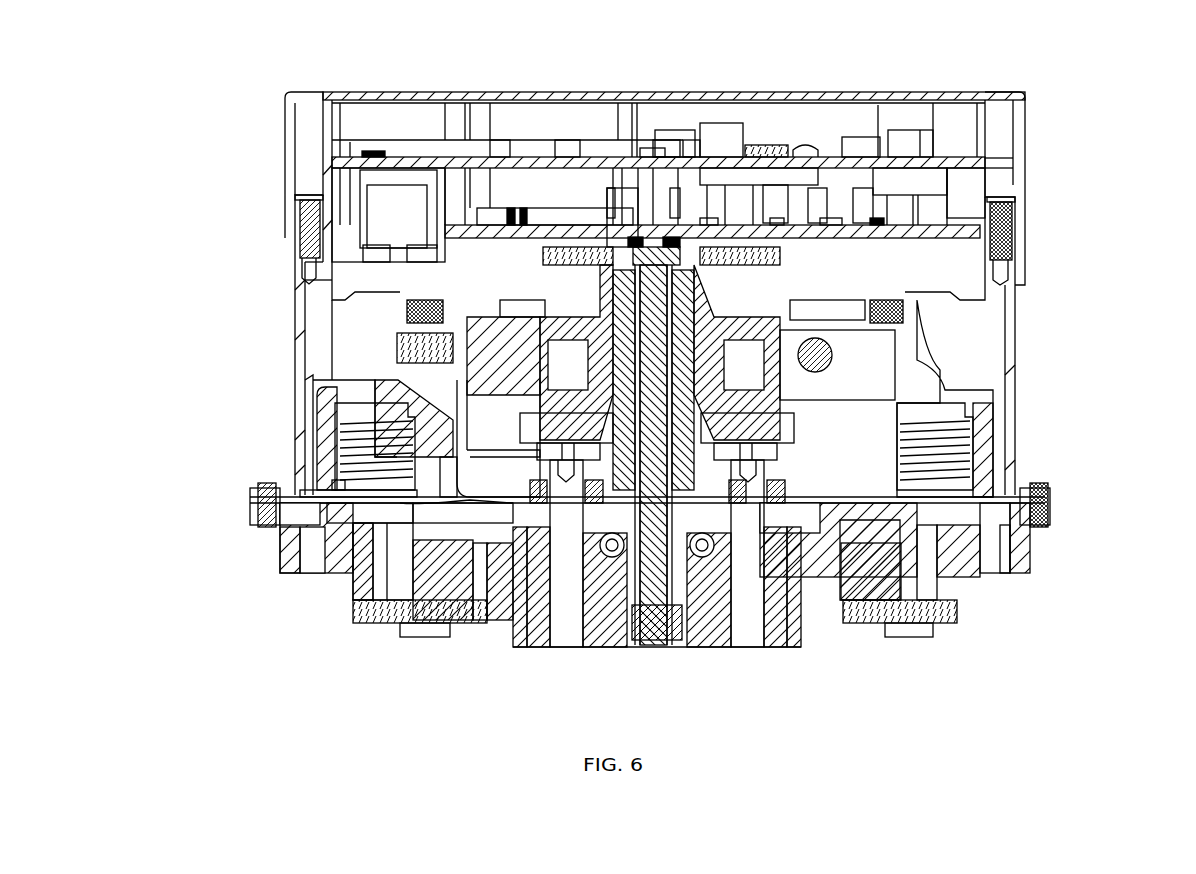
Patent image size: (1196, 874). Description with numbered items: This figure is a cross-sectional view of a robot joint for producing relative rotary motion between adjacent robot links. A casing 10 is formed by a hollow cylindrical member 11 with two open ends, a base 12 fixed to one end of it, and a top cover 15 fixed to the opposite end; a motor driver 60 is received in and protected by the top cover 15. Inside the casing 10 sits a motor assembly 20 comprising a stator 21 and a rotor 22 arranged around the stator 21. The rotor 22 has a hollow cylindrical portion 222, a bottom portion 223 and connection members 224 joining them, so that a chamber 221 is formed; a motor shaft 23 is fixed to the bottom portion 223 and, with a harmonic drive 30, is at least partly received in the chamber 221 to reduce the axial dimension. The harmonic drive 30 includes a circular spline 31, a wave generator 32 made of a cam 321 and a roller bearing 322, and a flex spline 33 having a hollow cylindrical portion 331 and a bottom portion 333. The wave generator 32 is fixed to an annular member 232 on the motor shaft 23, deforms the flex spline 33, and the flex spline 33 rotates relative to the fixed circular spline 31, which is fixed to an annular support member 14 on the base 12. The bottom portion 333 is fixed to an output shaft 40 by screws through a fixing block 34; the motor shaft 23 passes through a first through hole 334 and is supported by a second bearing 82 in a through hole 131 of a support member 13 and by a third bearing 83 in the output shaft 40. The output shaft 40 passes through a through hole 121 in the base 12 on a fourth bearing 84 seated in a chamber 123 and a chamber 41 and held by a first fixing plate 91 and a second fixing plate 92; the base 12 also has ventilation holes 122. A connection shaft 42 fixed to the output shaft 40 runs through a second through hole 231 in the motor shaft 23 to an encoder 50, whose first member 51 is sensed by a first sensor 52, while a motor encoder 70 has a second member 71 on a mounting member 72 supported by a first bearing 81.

The casing 10 is at (292, 331).
The hollow cylindrical member 11 is at (300, 282).
The base 12 is at (962, 532).
The support member 13 is at (350, 307).
The annular support member 14 is at (470, 390).
The top cover 15 is at (848, 100).
The motor assembly 20 is at (997, 420).
The stator 21 is at (925, 462).
The rotor 22 is at (992, 408).
The motor shaft 23 is at (641, 540).
The harmonic drive 30 is at (393, 349).
The circular spline 31 is at (445, 356).
The wave generator 32 is at (472, 204).
The flex spline 33 is at (304, 588).
The fixing block 34 is at (528, 637).
The output shaft 40 is at (767, 613).
The chamber 41 is at (433, 620).
The connection shaft 42 is at (652, 637).
The encoder 50 is at (655, 139).
The first member 51 is at (615, 245).
The first sensor 52 is at (662, 170).
The motor driver 60 is at (906, 140).
The motor encoder 70 is at (722, 247).
The second member 71 is at (748, 245).
The mounting member 72 is at (770, 250).
The first bearing 81 is at (630, 277).
The second bearing 82 is at (602, 262).
The third bearing 83 is at (700, 560).
The fourth bearing 84 is at (447, 573).
The first fixing plate 91 is at (395, 517).
The second fixing plate 92 is at (467, 623).
The through hole 121 is at (833, 515).
The ventilation holes 122 is at (998, 517).
The chamber 123 is at (380, 610).
The through hole 131 is at (583, 285).
The chamber 221 is at (897, 300).
The hollow cylindrical portion 222 is at (930, 441).
The bottom portion 223 is at (700, 318).
The connection members 224 is at (923, 328).
The second through hole 231 is at (715, 520).
The annular member 232 is at (860, 500).
The cam 321 is at (520, 330).
The roller bearing 322 is at (478, 318).
The hollow cylindrical portion 331 is at (473, 452).
The bottom portion 333 is at (513, 503).
The first through hole 334 is at (603, 560).